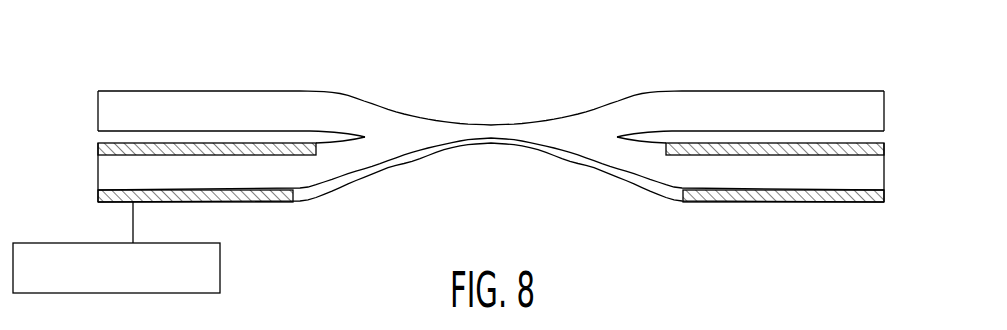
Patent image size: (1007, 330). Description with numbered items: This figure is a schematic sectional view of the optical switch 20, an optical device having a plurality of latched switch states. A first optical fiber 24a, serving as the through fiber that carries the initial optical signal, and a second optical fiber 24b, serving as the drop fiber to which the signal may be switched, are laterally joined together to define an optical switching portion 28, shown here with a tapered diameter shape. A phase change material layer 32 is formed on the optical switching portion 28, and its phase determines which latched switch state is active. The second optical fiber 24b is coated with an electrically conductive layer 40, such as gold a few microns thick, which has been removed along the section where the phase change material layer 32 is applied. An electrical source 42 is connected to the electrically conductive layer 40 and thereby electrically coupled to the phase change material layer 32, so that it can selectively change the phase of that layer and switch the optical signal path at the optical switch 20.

The optical switch 20 is at (497, 60).
The first optical fiber 24a is at (98, 100).
The second optical fiber 24b is at (98, 170).
The optical switching portion 28 is at (527, 96).
The phase change material (PCM) layer 32 is at (397, 165).
The electrically conductive layer 40 is at (233, 198).
The electrical source 42 is at (143, 293).